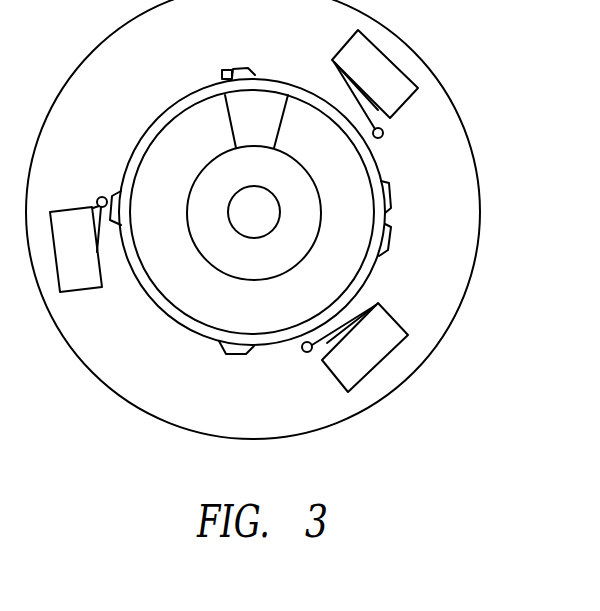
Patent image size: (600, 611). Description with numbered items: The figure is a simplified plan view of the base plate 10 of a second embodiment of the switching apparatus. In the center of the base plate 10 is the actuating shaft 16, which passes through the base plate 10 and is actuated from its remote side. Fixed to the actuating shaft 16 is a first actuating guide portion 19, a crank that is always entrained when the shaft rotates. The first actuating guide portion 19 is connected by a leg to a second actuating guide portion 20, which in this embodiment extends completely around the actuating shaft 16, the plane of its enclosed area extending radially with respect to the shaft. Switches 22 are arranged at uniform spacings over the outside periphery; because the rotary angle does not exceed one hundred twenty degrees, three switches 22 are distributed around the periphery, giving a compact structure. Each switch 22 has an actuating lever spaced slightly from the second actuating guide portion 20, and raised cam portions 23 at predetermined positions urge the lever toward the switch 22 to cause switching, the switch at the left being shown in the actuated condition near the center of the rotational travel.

The base plate 10 is at (194, 384).
The actuating shaft 16 is at (268, 229).
The first actuating guide portion 19 is at (266, 169).
The second actuating guide portion 20 is at (349, 126).
The switch 22 is at (386, 85).
The raised cam portion 23 is at (237, 70).